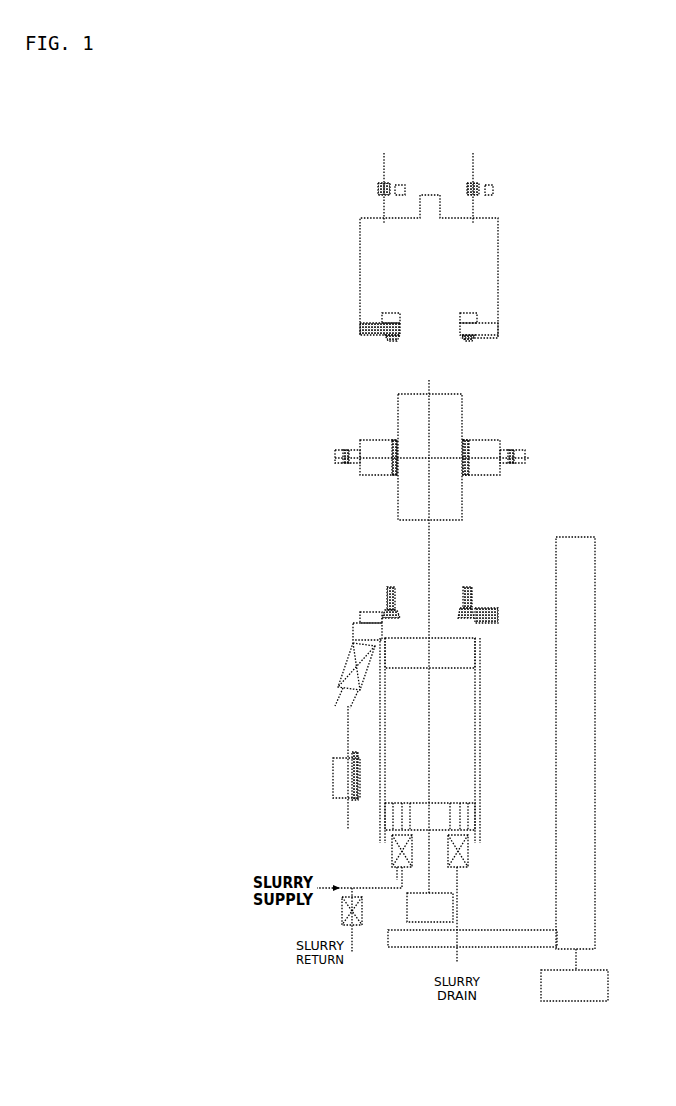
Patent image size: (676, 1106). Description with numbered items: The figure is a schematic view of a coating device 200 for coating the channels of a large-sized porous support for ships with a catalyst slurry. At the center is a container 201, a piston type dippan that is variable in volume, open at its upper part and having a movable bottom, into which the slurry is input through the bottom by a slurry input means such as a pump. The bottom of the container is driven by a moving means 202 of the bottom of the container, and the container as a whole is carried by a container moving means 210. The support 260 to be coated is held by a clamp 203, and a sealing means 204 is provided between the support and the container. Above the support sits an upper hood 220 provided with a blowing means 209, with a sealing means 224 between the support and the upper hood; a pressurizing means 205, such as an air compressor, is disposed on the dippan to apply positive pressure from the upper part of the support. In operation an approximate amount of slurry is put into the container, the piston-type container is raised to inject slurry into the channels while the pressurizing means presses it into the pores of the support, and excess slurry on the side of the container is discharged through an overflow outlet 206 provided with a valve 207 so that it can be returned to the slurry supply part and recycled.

The coating device 200 is at (562, 458).
The container 201 is at (480, 708).
The moving means of a bottom of a container 202 is at (453, 908).
The clamp 203 is at (335, 458).
The sealing means 204 is at (498, 612).
The pressurizing means 205 is at (384, 153).
The overflow outlet 206 is at (346, 690).
The valve 207 is at (350, 655).
The blowing means 209 is at (473, 153).
The container moving means 210 is at (595, 733).
The upper hood 220 is at (360, 262).
The sealing means 224 is at (376, 346).
The support 260 is at (462, 410).